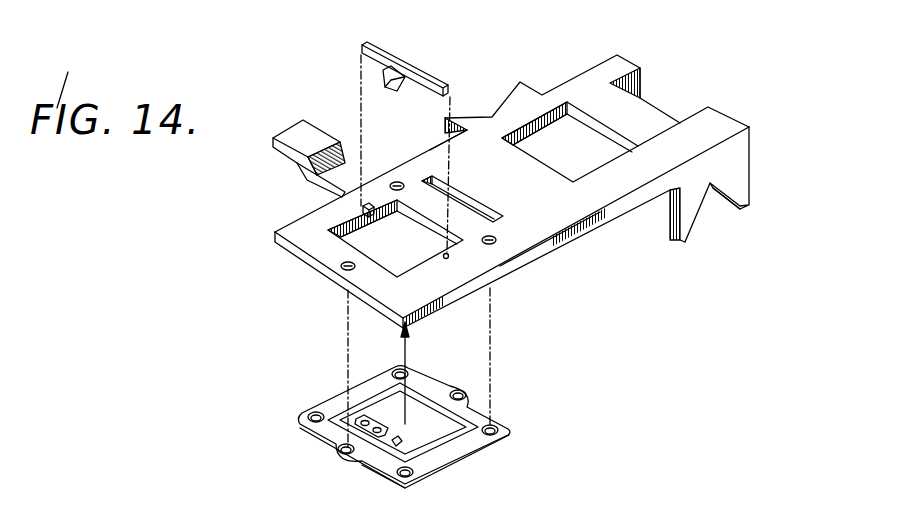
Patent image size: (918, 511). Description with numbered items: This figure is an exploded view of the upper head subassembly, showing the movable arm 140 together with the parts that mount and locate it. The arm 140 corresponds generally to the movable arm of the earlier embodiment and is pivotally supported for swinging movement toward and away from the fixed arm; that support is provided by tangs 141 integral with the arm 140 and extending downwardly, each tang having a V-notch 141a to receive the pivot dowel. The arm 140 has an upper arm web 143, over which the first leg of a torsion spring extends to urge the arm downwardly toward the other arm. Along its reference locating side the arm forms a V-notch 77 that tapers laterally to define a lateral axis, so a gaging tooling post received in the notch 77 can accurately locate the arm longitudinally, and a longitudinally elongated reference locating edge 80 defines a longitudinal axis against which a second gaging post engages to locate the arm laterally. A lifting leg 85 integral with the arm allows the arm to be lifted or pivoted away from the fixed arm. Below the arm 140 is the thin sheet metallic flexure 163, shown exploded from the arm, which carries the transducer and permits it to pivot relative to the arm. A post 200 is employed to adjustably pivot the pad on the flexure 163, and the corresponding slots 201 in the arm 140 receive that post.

The movable arm 140 is at (531, 248).
The tang 141 is at (742, 187).
The V-notch 141a is at (730, 198).
The upper arm web 143 is at (518, 180).
The V-notch 77 is at (503, 97).
The reference locating edge 80 is at (427, 152).
The lifting leg 85 is at (308, 136).
The post 200 is at (416, 57).
The slot 201 is at (364, 208).
The flexure 163 is at (296, 439).